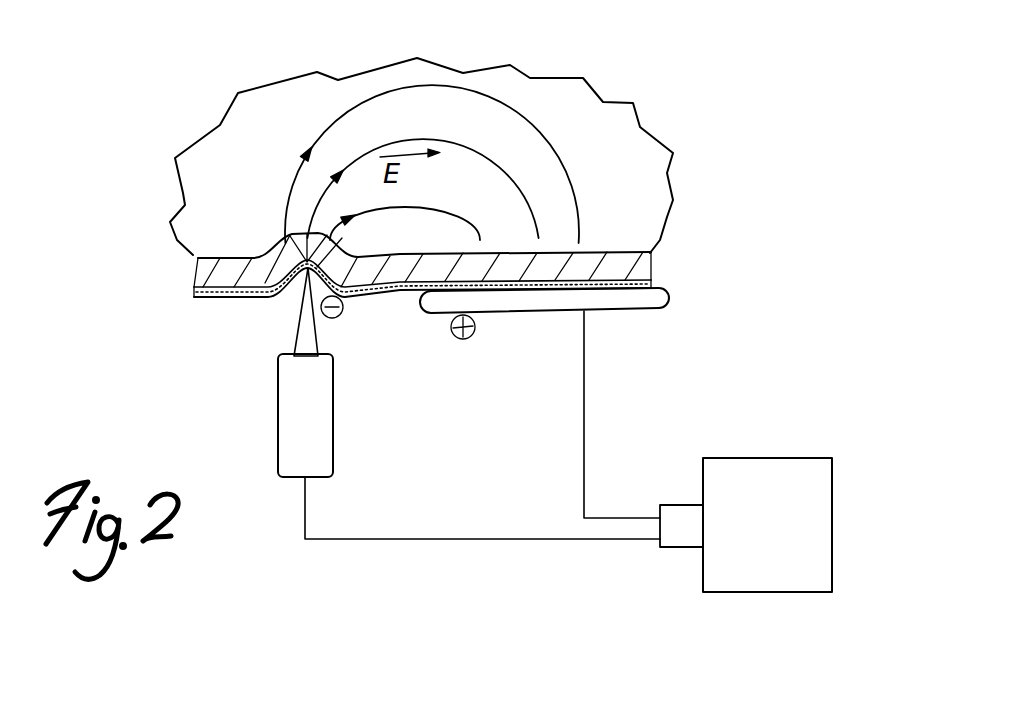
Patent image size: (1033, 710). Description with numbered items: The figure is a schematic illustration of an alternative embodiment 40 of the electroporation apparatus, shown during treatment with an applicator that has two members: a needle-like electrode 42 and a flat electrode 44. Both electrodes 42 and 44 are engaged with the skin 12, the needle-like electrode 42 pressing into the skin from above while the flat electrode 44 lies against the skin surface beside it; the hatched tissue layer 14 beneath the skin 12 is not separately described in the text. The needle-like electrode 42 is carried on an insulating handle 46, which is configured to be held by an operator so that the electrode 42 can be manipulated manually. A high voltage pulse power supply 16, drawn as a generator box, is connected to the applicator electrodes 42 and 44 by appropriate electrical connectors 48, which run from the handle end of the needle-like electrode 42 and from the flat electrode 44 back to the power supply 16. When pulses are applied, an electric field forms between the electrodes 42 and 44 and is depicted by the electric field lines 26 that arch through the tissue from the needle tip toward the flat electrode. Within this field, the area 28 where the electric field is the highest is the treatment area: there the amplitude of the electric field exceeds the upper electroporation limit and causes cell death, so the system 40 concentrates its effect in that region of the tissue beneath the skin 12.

The skin 12 is at (194, 294).
The skin tissue layer 14 is at (196, 260).
The high voltage pulse power supply 16 is at (756, 458).
The electric field lines 26 is at (517, 112).
The area where the electric field is the highest 28 is at (420, 238).
The alternative embodiment / system 40 is at (779, 376).
The needle-like electrode 42 is at (302, 328).
The flat electrode 44 is at (672, 300).
The insulating handle 46 is at (278, 414).
The electrical connectors 48 is at (585, 462).